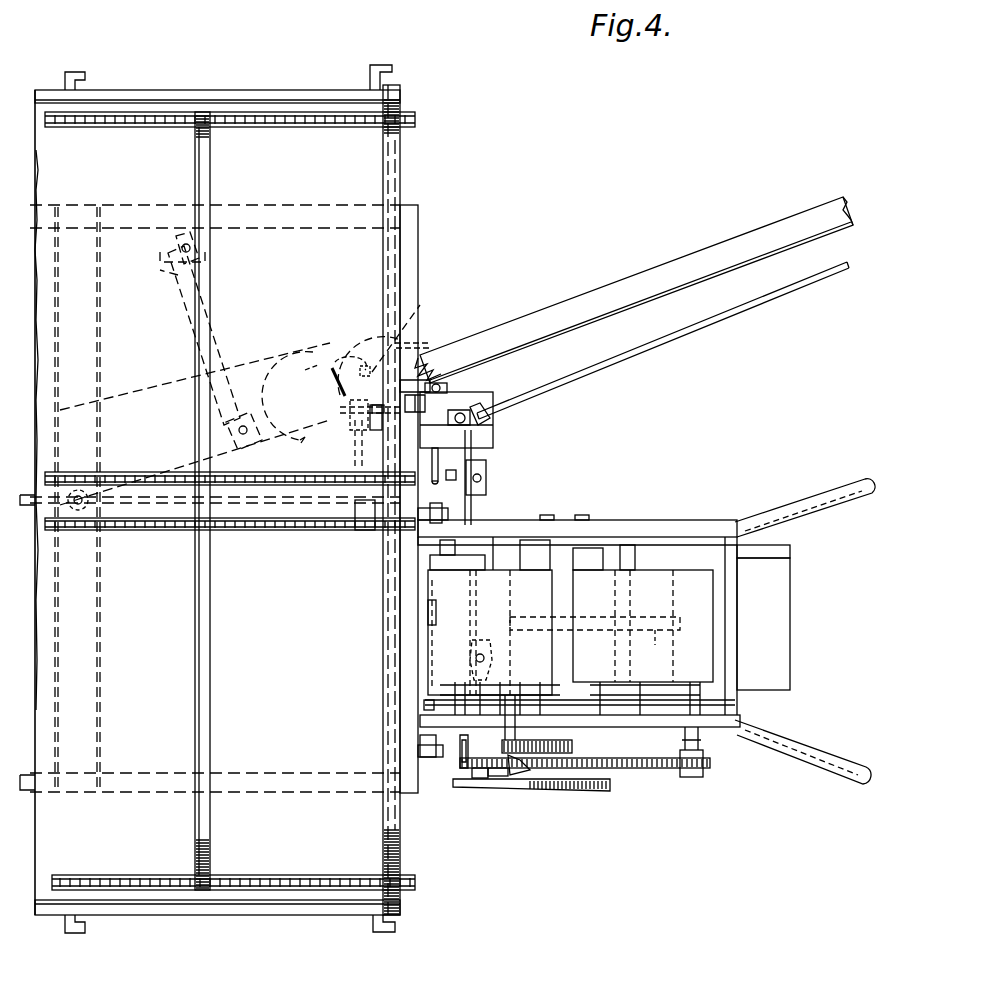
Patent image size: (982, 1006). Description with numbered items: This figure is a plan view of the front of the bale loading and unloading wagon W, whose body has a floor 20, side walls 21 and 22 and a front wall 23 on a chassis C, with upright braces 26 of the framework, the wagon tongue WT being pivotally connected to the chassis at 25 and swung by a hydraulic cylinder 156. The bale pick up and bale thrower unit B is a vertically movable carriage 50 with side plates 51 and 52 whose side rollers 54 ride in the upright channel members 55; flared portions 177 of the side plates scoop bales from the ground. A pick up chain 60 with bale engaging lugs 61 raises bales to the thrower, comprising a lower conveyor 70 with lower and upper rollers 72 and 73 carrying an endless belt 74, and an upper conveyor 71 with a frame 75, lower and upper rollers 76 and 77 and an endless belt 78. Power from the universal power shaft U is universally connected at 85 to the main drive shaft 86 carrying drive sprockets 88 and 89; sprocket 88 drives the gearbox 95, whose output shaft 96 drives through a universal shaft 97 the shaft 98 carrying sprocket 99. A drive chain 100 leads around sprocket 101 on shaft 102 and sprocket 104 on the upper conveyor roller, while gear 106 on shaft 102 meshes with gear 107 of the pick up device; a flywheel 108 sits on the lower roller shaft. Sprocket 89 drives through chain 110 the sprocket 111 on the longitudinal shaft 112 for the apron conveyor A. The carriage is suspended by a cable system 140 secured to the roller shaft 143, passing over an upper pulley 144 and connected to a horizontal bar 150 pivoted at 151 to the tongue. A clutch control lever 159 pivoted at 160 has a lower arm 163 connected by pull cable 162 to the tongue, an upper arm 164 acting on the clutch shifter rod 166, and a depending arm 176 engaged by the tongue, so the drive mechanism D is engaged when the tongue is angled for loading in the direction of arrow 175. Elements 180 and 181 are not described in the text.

The floor 20 is at (306, 173).
The side wall 21 is at (305, 915).
The side wall 22 is at (218, 92).
The front wall 23 is at (401, 176).
The pivotal connection 25 is at (78, 512).
The upright braces 26 is at (393, 68).
The carriage 50 is at (608, 520).
The side plate 51 is at (620, 727).
The side plate 52 is at (547, 518).
The side rollers 54 is at (418, 520).
The upright channel members 55 is at (435, 505).
The pick up chain 60 is at (655, 632).
The bale engaging lugs 61 is at (670, 624).
The lower conveyor 70 is at (497, 554).
The upper conveyor 71 is at (650, 557).
The lower roller 72 is at (525, 540).
The upper roller 73 is at (440, 560).
The endless belt 74 is at (508, 599).
The frame 75 is at (740, 543).
The lower roller 76 is at (705, 557).
The upper roller 77 is at (578, 562).
The endless belt 78 is at (668, 597).
The universal connection 85 is at (476, 397).
The main drive shaft 86 is at (348, 410).
The drive sprocket 88 is at (410, 360).
The drive sprocket 89 is at (368, 428).
The gearbox 95 is at (492, 416).
The output shaft 96 is at (478, 462).
The universal shaft 97 is at (487, 490).
The shaft 98 is at (488, 660).
The sprocket 99 is at (478, 780).
The drive chain 100 is at (668, 770).
The sprocket 101 is at (500, 778).
The shaft 102 is at (512, 770).
The sprocket 104 is at (704, 762).
The gear 106 is at (505, 740).
The gear 107 is at (573, 748).
The flywheel 108 is at (586, 792).
The chain 110 is at (358, 454).
The sprocket 111 is at (358, 508).
The longitudinal shaft 112 is at (268, 502).
The cable system 140 is at (418, 640).
The shaft 143 is at (415, 708).
The upper pulley 144 is at (418, 611).
The horizontal bar 150 is at (440, 468).
The pivotal connection 151 is at (440, 388).
The hydraulic cylinder 156 is at (222, 322).
The clutch control lever 159 is at (330, 368).
The pivot 160 is at (337, 358).
The pull cable 162 is at (310, 368).
The lower arm 163 is at (362, 364).
The upper arm 164 is at (305, 378).
The clutch shifter rod 166 is at (150, 400).
The arrow 175 is at (610, 175).
The depending arm 176 is at (416, 316).
The flared portions 177 is at (866, 480).
The block 180 is at (458, 770).
The block 181 is at (457, 467).
The apron conveyor A is at (167, 496).
The bale pick up and bale thrower unit B is at (590, 502).
The chassis C is at (167, 802).
The drive mechanism D is at (616, 780).
The universal power shaft U is at (757, 306).
The bale loading and unloading wagon W is at (304, 75).
The wagon tongue WT is at (727, 242).